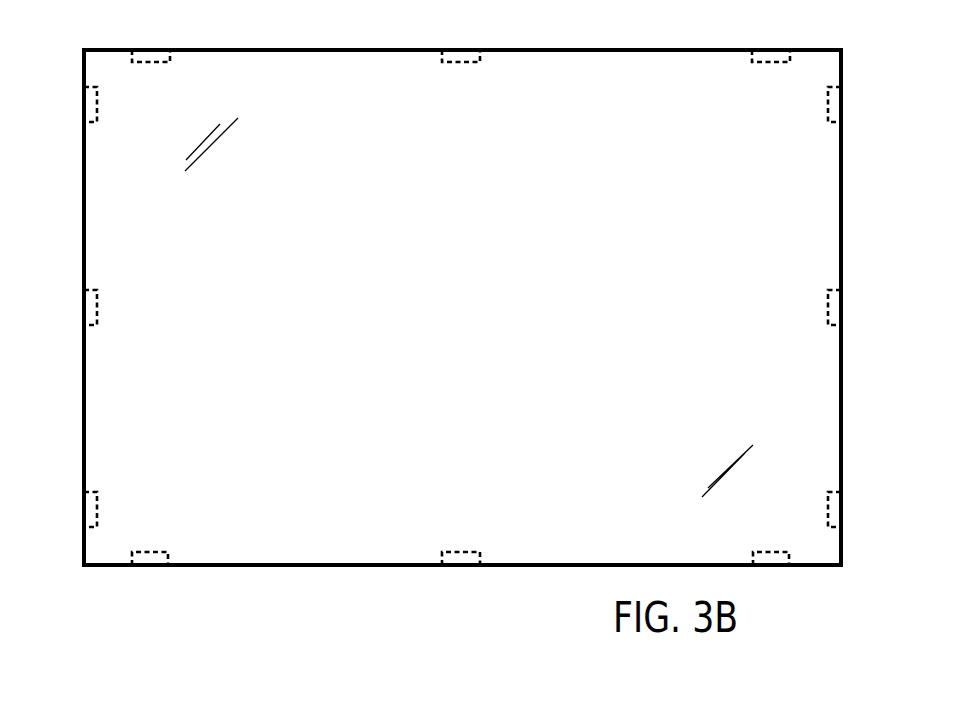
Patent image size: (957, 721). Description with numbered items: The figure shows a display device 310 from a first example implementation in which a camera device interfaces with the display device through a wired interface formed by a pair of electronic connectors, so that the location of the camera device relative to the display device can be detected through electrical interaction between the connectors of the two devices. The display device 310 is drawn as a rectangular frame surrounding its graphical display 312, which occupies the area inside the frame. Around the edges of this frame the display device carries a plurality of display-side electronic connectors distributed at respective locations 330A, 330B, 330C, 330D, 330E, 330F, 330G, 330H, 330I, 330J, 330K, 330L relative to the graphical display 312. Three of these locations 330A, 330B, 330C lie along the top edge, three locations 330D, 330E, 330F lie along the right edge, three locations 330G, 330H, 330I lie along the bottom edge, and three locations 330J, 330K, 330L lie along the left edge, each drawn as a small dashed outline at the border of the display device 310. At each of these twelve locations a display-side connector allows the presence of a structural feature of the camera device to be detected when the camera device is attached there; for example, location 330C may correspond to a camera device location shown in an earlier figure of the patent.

The display device 310 is at (210, 567).
The graphical display 312 is at (257, 522).
The location of display-side electronic connector 330A is at (149, 50).
The location of display-side electronic connector 330B is at (459, 50).
The location of display-side electronic connector 330C is at (769, 50).
The location of display-side electronic connector 330D is at (836, 104).
The location of display-side electronic connector 330E is at (836, 306).
The location of display-side electronic connector 330F is at (836, 509).
The location of display-side electronic connector 330G is at (770, 565).
The location of display-side electronic connector 330H is at (460, 565).
The location of display-side electronic connector 330I is at (150, 563).
The location of display-side electronic connector 330J is at (90, 510).
The location of display-side electronic connector 330K is at (90, 307).
The location of display-side electronic connector 330L is at (90, 105).